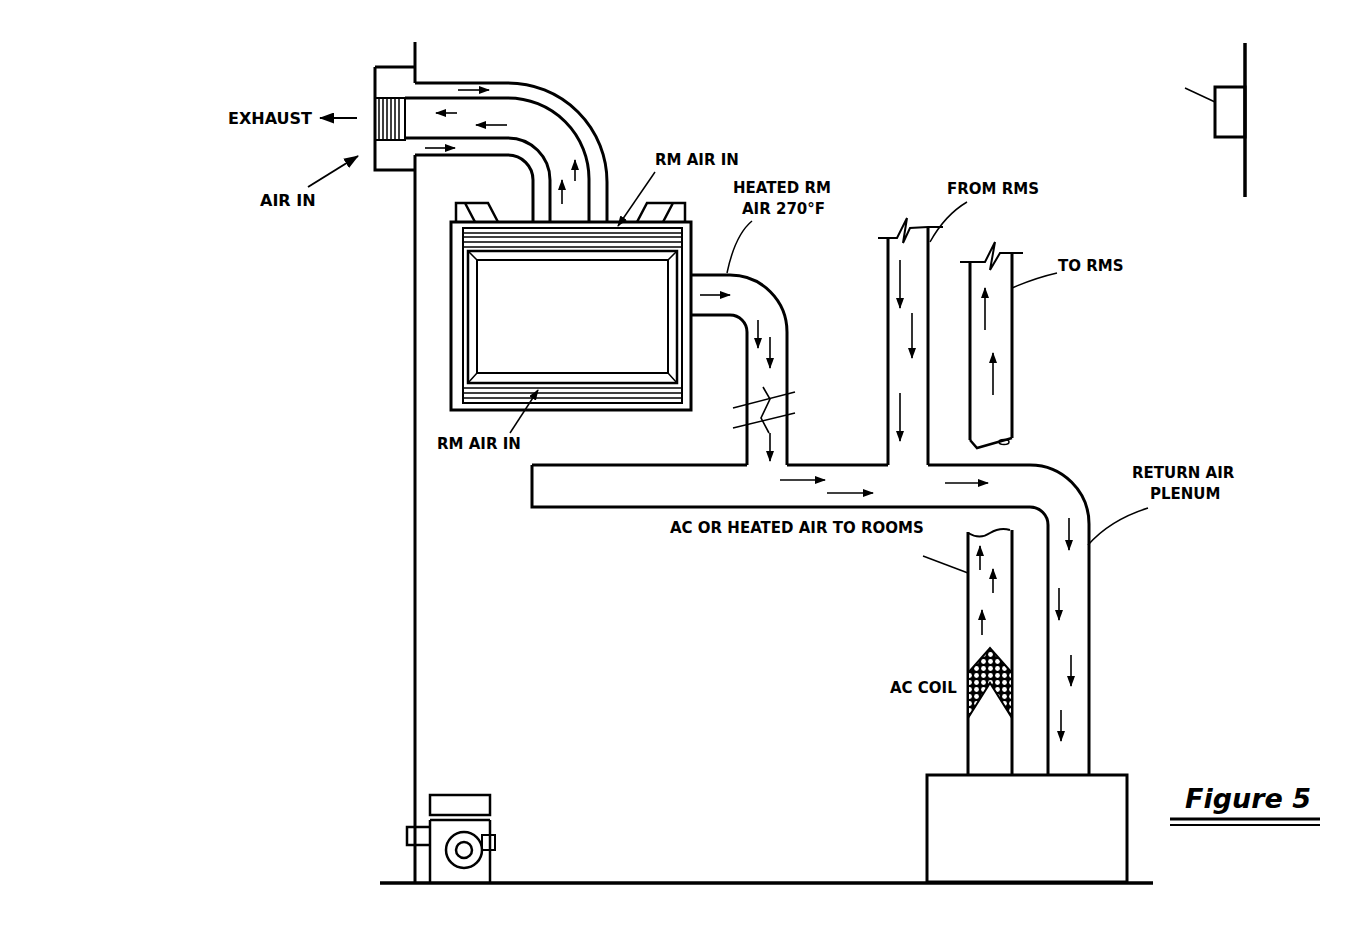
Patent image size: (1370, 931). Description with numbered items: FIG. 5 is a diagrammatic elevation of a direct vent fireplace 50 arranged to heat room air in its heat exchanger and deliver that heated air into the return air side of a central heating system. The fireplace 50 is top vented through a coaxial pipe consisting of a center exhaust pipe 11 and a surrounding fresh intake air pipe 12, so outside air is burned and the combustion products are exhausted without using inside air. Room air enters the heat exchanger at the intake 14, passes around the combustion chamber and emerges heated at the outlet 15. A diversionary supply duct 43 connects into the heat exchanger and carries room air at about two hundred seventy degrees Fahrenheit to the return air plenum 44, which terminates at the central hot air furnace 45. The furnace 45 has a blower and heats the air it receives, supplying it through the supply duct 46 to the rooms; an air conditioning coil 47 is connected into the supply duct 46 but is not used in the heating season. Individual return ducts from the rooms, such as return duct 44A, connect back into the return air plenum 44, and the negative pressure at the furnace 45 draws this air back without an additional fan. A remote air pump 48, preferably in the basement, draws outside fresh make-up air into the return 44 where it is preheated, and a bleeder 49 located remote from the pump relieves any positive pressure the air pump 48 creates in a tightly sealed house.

The exhaust pipe 11 is at (437, 98).
The fresh intake air pipe 12 is at (530, 84).
The heat exchanger intake 14 is at (628, 395).
The heat exchanger outlet 15 is at (597, 233).
The diversionary supply duct 43 is at (768, 302).
The return air plenum 44 is at (618, 500).
The return duct from rooms 44A is at (930, 263).
The central hot air furnace 45 is at (1118, 792).
The supply duct 46 is at (1012, 368).
The air conditioning coil 47 is at (968, 700).
The remote air pump 48 is at (480, 832).
The bleeder 49 is at (1228, 128).
The direct vent fireplace 50 is at (586, 261).